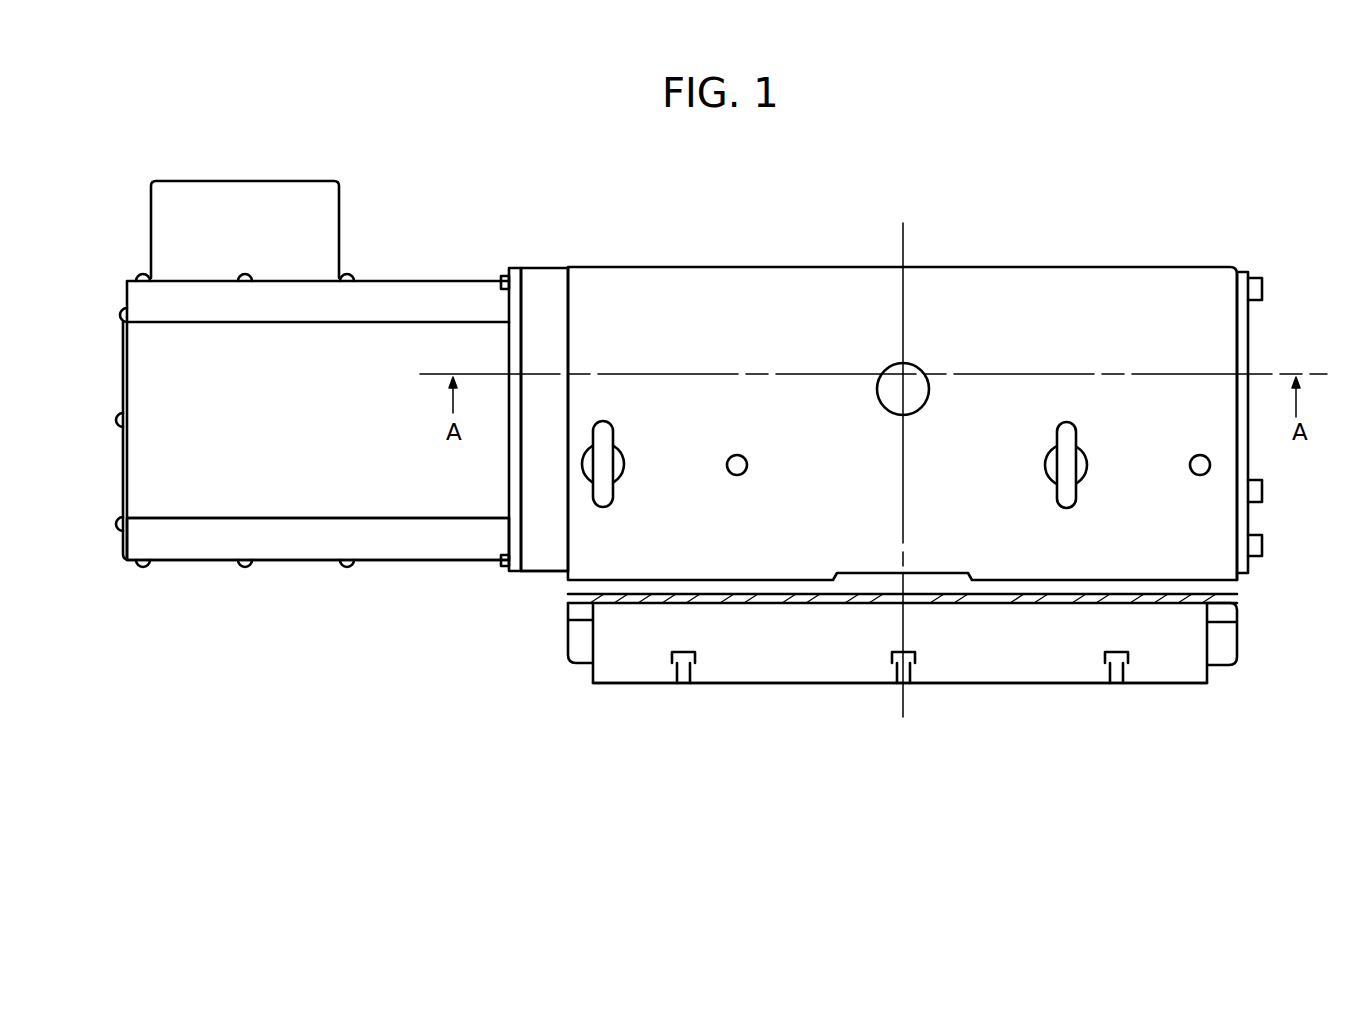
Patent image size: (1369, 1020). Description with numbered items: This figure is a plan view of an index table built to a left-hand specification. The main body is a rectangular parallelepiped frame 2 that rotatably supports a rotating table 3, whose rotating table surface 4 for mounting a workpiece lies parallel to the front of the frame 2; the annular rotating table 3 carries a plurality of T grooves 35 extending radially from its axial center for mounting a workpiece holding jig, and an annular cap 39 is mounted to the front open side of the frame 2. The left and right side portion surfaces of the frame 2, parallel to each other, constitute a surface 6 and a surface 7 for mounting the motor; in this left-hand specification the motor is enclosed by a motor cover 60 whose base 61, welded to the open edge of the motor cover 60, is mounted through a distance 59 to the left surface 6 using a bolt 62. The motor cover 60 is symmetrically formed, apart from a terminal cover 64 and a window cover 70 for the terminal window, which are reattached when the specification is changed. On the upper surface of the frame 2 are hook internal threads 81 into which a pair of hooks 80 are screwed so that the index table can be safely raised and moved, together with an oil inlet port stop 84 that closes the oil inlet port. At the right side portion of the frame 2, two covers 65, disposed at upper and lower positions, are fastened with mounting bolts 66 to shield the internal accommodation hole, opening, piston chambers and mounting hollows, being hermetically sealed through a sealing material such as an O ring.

The frame 2 is at (1043, 278).
The rotating table 3 is at (1196, 637).
The rotating table surface 4 is at (1000, 684).
The left surface 6 is at (567, 329).
The right surface 7 is at (1237, 415).
The T grooves 35 is at (692, 667).
The annular cap 39 is at (683, 598).
The distance 59 is at (530, 562).
The motor cover 60 is at (281, 507).
The base 61 is at (521, 268).
The bolt 62 is at (499, 566).
The terminal cover 64 is at (340, 202).
The covers 65 is at (1243, 322).
The mounting bolts 66 is at (1263, 548).
The window cover 70 is at (203, 563).
The hooks 80 is at (1062, 470).
The hook internal threads 81 is at (1193, 456).
The oil inlet port stop 84 is at (889, 364).